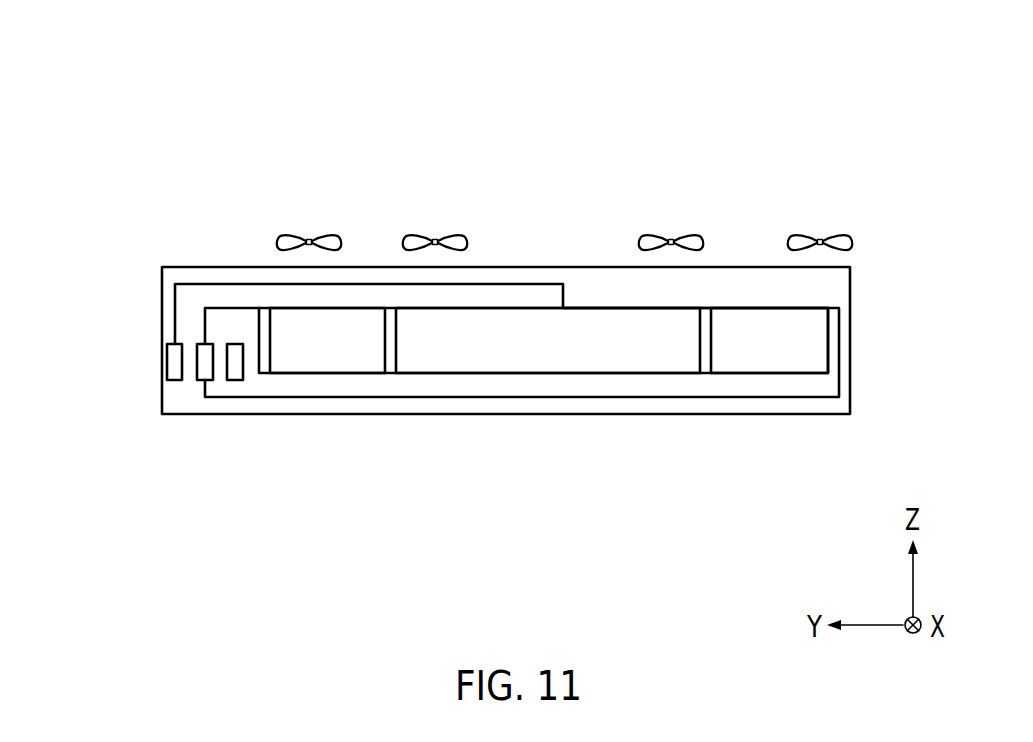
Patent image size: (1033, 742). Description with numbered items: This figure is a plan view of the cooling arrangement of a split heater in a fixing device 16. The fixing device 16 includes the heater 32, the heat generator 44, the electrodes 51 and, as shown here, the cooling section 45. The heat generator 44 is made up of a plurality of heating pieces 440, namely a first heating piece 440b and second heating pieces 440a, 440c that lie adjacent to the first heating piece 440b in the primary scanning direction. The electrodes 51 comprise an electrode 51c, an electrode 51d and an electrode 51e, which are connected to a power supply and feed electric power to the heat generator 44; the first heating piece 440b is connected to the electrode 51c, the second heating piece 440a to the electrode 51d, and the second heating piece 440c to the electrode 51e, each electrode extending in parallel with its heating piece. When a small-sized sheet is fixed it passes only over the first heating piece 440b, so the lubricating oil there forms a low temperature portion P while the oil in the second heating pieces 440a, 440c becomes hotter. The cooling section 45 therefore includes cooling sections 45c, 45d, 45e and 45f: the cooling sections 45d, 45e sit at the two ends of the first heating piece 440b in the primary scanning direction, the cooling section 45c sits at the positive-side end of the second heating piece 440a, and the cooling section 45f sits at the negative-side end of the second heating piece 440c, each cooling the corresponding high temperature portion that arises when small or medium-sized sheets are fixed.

The fixing device 16 is at (216, 236).
The low temperature portion P is at (843, 276).
The heater 32 is at (852, 284).
The heat generator 44 is at (836, 339).
The heating pieces 440 is at (680, 468).
The second heating piece 440a is at (348, 363).
The first heating piece 440b is at (513, 358).
The second heating piece 440c is at (730, 368).
The cooling section 45 is at (663, 122).
The cooling section 45c is at (292, 235).
The cooling section 45d is at (410, 235).
The cooling section 45e is at (645, 235).
The cooling section 45f is at (793, 235).
The electrodes 51 is at (252, 532).
The electrode 51c is at (198, 285).
The electrode 51d is at (258, 308).
The electrode 51e is at (265, 375).